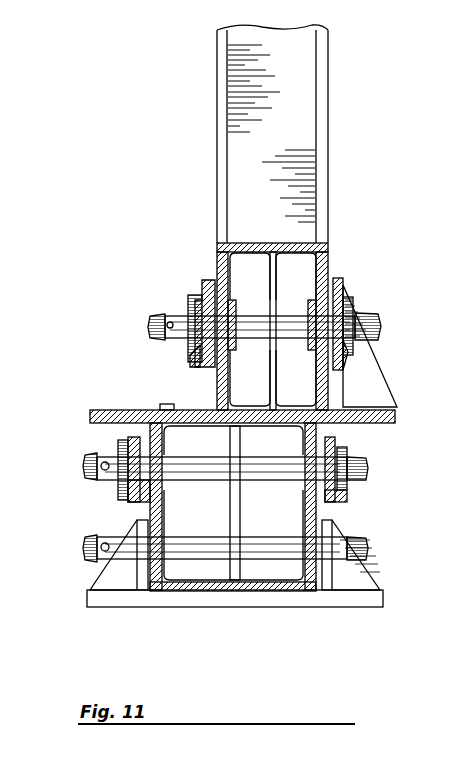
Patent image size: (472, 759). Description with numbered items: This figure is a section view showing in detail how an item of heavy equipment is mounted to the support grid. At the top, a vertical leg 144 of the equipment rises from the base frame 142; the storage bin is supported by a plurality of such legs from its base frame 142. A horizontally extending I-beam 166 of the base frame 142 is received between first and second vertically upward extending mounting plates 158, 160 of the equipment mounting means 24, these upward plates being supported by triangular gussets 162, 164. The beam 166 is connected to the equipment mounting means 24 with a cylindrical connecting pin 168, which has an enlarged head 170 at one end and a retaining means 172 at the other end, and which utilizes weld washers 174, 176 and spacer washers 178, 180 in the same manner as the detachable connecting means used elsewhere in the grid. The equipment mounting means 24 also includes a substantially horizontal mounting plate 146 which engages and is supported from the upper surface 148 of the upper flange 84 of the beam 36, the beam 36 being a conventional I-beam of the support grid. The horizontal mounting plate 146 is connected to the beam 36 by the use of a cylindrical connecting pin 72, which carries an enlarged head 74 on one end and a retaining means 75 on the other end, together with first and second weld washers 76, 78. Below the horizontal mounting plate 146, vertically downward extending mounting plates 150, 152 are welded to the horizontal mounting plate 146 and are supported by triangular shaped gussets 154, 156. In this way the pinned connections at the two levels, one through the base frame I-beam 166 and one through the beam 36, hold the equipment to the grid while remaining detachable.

The vertical legs 144 is at (308, 113).
The horizontally extending I-beam 166 is at (270, 247).
The base frame 142 is at (333, 257).
The spacer washer 178 is at (220, 305).
The spacer washer 180 is at (325, 307).
The first vertically upward extending mounting plate 158 is at (206, 280).
The weld washer 174 is at (193, 300).
The retaining means 172 is at (158, 315).
The triangular gusset 162 is at (188, 360).
The second vertically upward extending mounting plate 160 is at (340, 282).
The enlarged head 170 is at (352, 304).
The cylindrical connecting pin 168 is at (380, 323).
The weld washer 176 is at (345, 364).
The triangular gusset 164 is at (370, 386).
The equipment mounting means 24 is at (397, 402).
The upper flange 84 is at (163, 418).
The upper surface 148 is at (168, 424).
The horizontal mounting plate 146 is at (380, 421).
The vertically downward extending mounting plate 152 is at (305, 518).
The vertically downward extending mounting plate 150 is at (130, 445).
The triangular shaped gusset 154 is at (116, 445).
The retaining means 75 is at (95, 476).
The first weld washer 76 is at (130, 497).
The triangular shaped gusset 156 is at (360, 440).
The enlarged head 74 is at (347, 488).
The cylindrical connecting pin 72 is at (368, 471).
The second weld washer 78 is at (336, 500).
The beam 36 is at (182, 592).